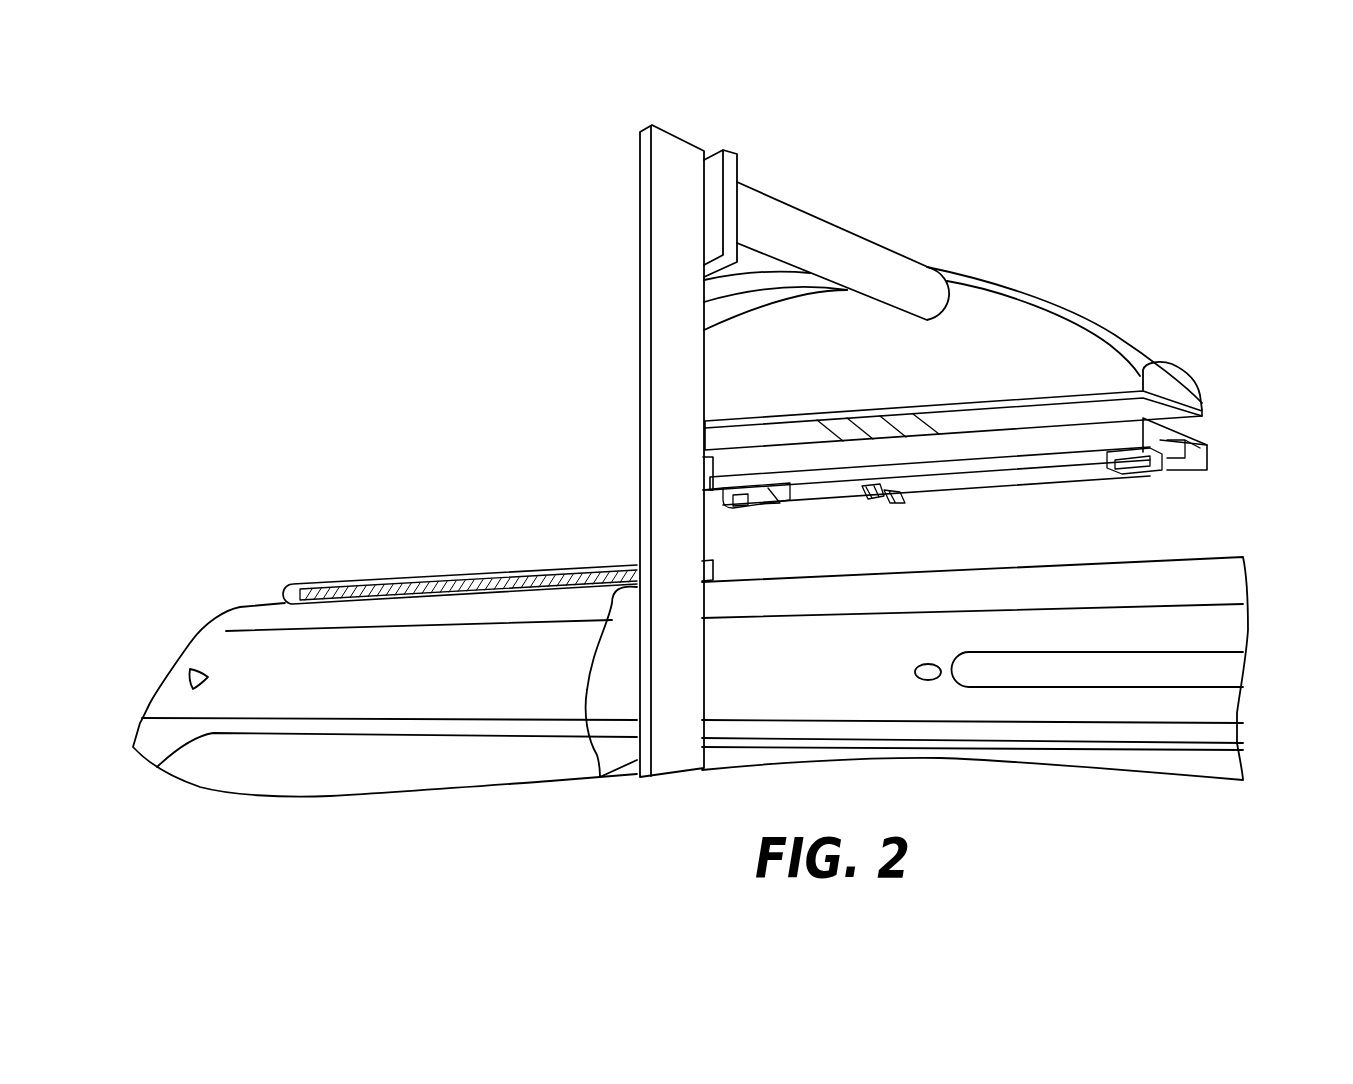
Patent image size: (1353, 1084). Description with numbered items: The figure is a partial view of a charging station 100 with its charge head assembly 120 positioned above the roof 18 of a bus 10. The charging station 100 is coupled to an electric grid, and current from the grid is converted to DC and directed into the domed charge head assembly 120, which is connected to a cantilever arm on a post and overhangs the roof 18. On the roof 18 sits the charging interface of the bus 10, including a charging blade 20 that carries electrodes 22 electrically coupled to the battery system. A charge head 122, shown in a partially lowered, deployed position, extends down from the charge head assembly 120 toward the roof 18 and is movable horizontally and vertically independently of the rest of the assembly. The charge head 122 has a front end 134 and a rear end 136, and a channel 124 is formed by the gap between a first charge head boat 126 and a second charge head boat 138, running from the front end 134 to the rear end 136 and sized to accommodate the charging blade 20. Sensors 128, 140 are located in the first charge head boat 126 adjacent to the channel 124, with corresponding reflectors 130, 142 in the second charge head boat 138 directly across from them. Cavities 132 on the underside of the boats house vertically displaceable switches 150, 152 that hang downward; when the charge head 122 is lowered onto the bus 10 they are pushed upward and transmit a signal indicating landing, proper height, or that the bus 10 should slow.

The bus 10 is at (1063, 785).
The roof 18 is at (1193, 557).
The charging blade 20 is at (520, 570).
The electrodes 22 is at (412, 583).
The charging station 100 is at (905, 193).
The charge head assembly 120 is at (1112, 300).
The charge head 122 is at (1208, 440).
The channel 124 is at (992, 478).
The first charge head boat 126 is at (1006, 437).
The sensor 128 is at (1127, 450).
The reflector 130 is at (1137, 475).
The cavities 132 is at (876, 482).
The front end 134 is at (1190, 441).
The rear end 136 is at (703, 500).
The second charge head boat 138 is at (1197, 458).
The sensor 140 is at (753, 490).
The reflector 142 is at (770, 487).
The switch 150 is at (877, 500).
The switch 152 is at (903, 502).